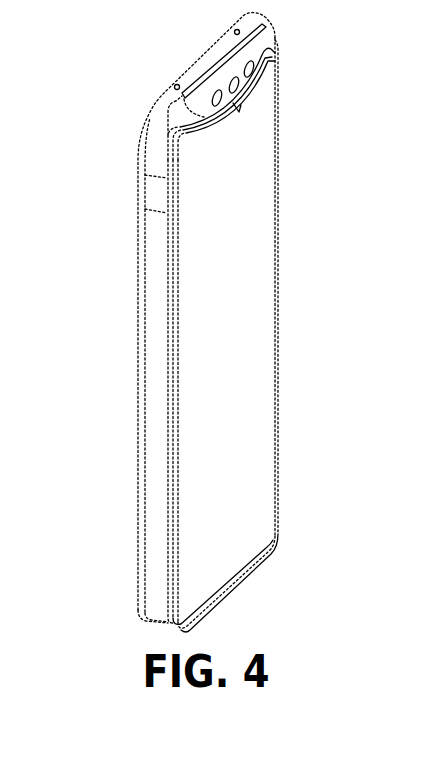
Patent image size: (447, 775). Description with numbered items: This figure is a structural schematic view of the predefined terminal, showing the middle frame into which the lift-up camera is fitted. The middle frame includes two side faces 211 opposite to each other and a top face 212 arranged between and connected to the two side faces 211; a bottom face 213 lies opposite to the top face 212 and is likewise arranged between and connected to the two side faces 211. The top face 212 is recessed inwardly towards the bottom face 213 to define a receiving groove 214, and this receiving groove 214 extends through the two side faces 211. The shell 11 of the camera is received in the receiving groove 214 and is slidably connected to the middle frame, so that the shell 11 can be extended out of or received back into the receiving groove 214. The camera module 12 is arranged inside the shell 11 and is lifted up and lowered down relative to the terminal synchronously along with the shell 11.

The shell 11 is at (212, 37).
The camera module 12 is at (233, 110).
The side faces 211 is at (153, 245).
The top face 212 is at (187, 137).
The bottom face 213 is at (240, 577).
The receiving groove 214 is at (210, 123).